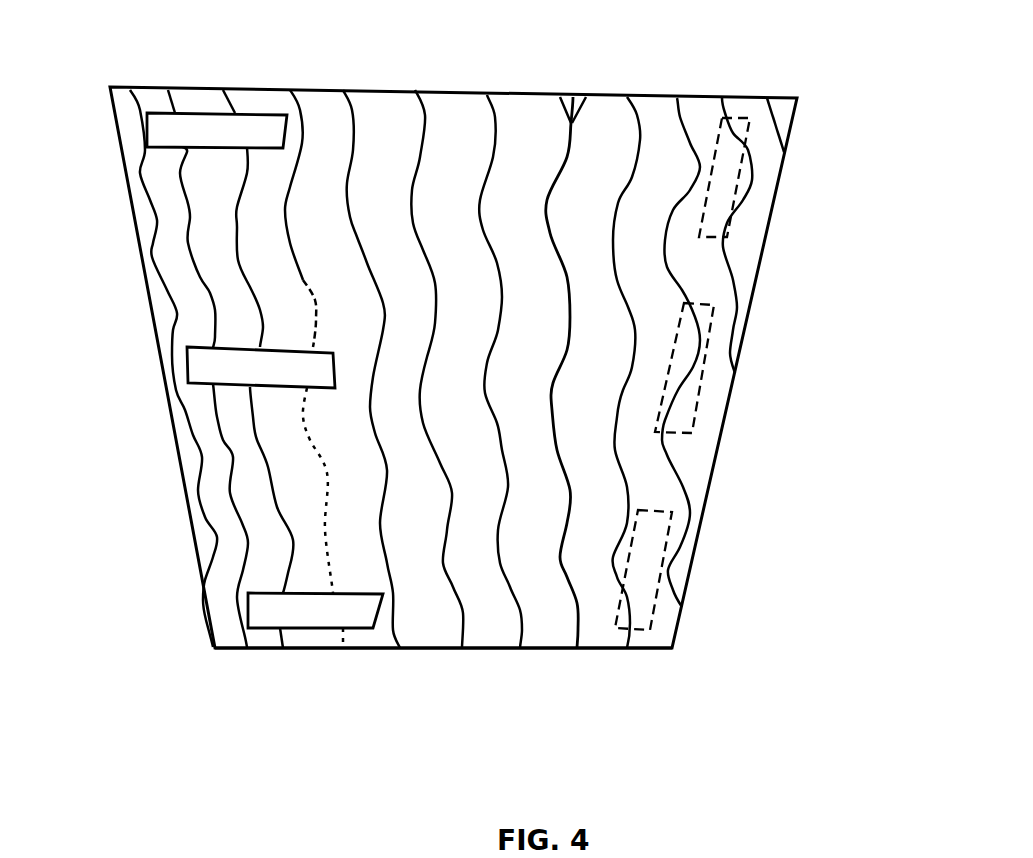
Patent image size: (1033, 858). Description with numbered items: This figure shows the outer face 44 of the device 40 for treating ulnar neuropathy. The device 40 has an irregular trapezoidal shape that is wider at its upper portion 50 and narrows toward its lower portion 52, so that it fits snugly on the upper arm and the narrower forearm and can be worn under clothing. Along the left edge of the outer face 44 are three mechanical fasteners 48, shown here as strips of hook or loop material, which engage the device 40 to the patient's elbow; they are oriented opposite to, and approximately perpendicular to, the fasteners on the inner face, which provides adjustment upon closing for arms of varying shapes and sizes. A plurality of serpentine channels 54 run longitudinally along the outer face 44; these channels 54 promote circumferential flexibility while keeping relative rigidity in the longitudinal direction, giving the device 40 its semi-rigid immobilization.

The device for treating ulnar neuropathy 40 is at (801, 301).
The outer face 44 is at (320, 97).
The mechanical fasteners 48 is at (160, 126).
The upper portion 50 is at (450, 93).
The lower portion 52 is at (413, 650).
The channels 54 is at (573, 97).